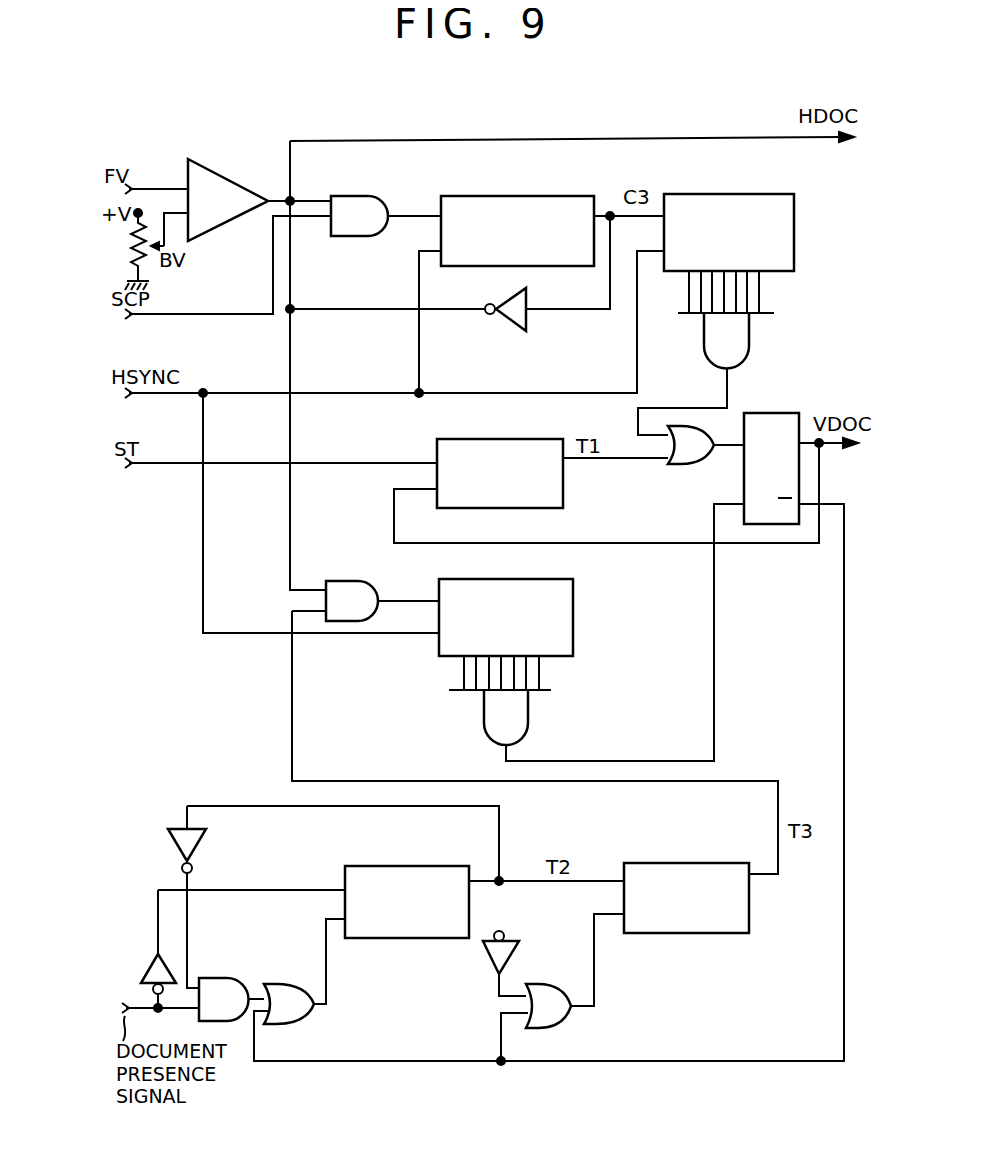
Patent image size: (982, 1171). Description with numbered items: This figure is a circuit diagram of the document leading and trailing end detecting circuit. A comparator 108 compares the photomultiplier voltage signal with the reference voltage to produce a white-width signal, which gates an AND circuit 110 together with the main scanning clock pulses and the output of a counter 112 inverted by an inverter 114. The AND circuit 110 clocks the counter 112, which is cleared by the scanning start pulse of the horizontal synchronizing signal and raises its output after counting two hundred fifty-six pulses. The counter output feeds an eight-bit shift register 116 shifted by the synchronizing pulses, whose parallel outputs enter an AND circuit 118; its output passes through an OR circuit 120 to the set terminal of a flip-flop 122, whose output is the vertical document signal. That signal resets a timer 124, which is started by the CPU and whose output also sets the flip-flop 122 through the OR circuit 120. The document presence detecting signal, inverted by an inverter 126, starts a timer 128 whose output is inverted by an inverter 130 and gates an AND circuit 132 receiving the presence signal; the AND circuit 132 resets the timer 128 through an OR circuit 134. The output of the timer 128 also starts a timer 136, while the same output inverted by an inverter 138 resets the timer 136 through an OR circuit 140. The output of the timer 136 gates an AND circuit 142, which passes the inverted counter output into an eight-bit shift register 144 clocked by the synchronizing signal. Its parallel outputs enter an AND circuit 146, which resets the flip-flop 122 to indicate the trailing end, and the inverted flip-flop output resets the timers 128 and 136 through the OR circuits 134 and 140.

The comparator 108 is at (228, 180).
The AND circuit 110 is at (375, 195).
The counter 112 is at (545, 195).
The inverter 114 is at (507, 322).
The shift register 116 is at (753, 193).
The AND circuit 118 is at (750, 342).
The OR circuit 120 is at (689, 464).
The flip-flop 122 is at (772, 412).
The timer 124 is at (527, 438).
The inverter 126 is at (147, 957).
The timer 128 is at (440, 865).
The inverter 130 is at (200, 840).
The AND circuit 132 is at (213, 977).
The OR circuit 134 is at (287, 983).
The timer 136 is at (696, 862).
The inverter 138 is at (514, 950).
The OR circuit 140 is at (551, 983).
The AND circuit 142 is at (350, 580).
The shift register 144 is at (574, 603).
The AND circuit 146 is at (528, 718).